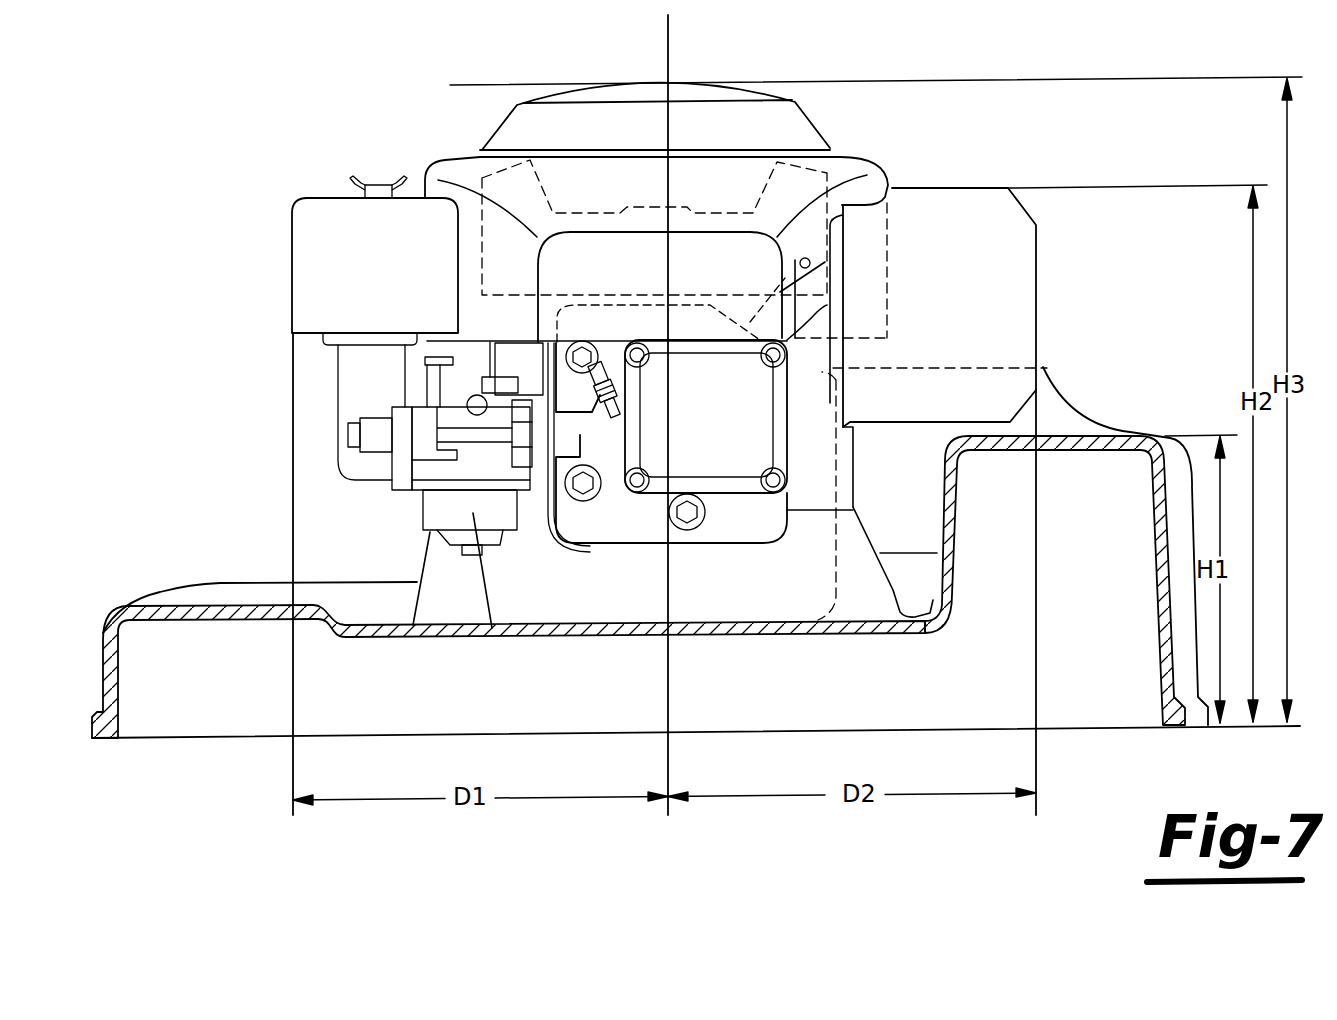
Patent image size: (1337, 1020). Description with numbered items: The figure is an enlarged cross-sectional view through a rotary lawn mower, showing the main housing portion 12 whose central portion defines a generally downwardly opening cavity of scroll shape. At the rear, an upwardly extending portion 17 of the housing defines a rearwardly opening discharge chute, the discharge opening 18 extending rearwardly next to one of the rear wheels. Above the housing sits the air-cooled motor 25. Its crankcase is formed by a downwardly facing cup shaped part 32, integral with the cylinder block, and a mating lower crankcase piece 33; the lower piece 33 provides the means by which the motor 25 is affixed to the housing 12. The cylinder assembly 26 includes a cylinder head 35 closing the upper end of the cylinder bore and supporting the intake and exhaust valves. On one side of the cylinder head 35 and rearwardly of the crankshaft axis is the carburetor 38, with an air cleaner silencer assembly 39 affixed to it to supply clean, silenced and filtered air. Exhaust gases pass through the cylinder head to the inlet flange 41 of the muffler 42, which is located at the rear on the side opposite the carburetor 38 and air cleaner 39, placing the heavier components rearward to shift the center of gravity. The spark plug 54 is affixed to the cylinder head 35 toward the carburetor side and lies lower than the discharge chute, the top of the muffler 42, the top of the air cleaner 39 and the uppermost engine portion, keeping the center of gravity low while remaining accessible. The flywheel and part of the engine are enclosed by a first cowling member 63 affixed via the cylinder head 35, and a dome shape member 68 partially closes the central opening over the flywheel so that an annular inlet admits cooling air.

The main housing portion 12 is at (277, 595).
The upwardly extending portion 17 is at (1100, 437).
The discharge opening 18 is at (1158, 605).
The motor 25 is at (305, 392).
The cylinder assembly 26 is at (698, 553).
The cup shaped part 32 is at (823, 462).
The lower crankcase piece 33 is at (853, 557).
The cylinder head 35 is at (636, 527).
The carburetor 38 is at (492, 628).
The air cleaner silencer assembly 39 is at (313, 258).
The inlet flange 41 is at (803, 313).
The muffler 42 is at (950, 212).
The spark plug 54 is at (594, 413).
The first cowling member 63 is at (455, 172).
The dome shape member 68 is at (800, 125).